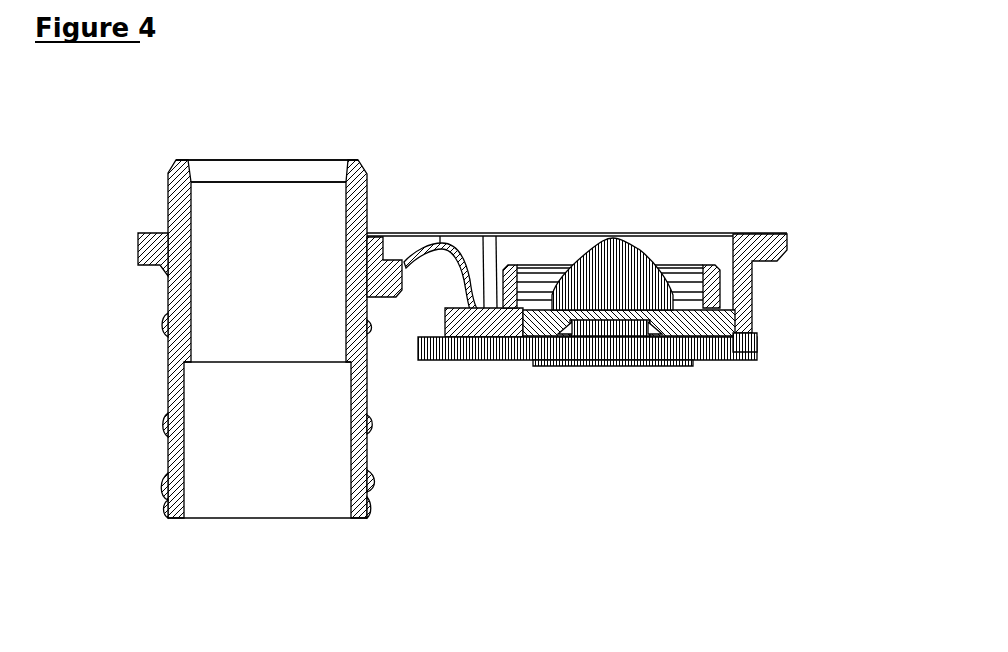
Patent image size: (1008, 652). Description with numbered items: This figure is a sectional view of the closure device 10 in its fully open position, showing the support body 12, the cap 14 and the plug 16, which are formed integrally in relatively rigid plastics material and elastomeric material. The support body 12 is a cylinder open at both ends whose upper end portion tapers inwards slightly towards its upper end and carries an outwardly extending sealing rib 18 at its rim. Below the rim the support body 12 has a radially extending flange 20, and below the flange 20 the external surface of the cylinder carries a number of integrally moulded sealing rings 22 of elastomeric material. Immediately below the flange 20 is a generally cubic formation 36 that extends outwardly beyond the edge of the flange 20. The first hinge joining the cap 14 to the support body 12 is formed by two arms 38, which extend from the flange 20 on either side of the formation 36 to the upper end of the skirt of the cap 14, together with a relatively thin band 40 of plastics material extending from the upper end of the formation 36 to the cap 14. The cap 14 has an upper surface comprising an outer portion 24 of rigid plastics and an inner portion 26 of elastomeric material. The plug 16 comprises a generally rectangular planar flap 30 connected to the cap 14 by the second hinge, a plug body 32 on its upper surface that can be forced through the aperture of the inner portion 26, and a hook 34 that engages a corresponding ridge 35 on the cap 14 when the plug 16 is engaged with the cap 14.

The closure device 10 is at (752, 113).
The support body 12 is at (131, 386).
The cap 14 is at (822, 241).
The plug 16 is at (605, 408).
The sealing rib 18 is at (358, 162).
The flange 20 is at (140, 233).
The sealing rings 22 is at (163, 418).
The outer portion 24 is at (752, 293).
The inner portion 26 is at (643, 362).
The flap 30 is at (752, 353).
The plug body 32 is at (623, 248).
The hook 34 is at (443, 308).
The ridge 35 is at (497, 362).
The formation 36 is at (400, 249).
The arms 38 is at (420, 244).
The band 40 is at (500, 249).